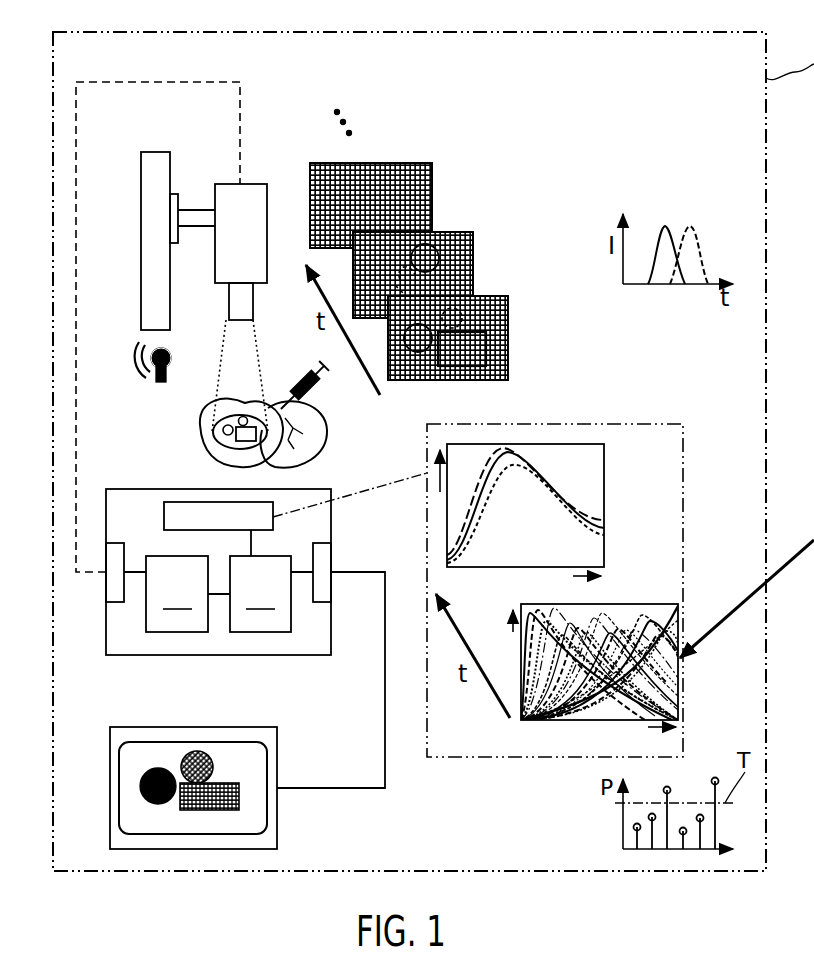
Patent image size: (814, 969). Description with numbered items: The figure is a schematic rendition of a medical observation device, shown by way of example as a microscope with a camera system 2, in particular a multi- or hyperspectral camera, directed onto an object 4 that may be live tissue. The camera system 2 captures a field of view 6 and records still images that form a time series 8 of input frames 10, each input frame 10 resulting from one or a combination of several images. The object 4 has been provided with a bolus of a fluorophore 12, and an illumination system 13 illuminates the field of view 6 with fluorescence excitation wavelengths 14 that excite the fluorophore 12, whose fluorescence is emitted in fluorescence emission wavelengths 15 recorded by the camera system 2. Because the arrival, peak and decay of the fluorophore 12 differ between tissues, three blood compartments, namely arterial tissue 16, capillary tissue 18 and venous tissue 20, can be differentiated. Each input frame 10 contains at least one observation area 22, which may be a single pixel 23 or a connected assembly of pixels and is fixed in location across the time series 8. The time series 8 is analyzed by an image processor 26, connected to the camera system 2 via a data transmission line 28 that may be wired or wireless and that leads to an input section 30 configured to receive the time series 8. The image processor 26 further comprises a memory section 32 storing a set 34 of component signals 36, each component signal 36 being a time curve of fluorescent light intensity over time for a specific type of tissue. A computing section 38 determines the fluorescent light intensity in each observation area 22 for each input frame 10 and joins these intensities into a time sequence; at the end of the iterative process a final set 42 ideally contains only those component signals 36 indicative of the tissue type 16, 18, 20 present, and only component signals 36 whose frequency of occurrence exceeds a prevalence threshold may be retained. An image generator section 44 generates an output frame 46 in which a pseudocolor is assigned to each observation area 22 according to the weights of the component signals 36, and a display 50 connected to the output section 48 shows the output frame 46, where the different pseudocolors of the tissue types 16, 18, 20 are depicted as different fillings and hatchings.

The camera system 2 is at (258, 184).
The object 4 is at (320, 431).
The field of view 6 is at (214, 432).
The time series 8 is at (480, 167).
The input frame 10 is at (388, 138).
The fluorophore 12 is at (283, 400).
The illumination system 13 is at (150, 379).
The fluorescence excitation wavelengths 14 is at (692, 226).
The fluorescence emission wavelengths 15 is at (665, 226).
The arterial tissue 16 is at (243, 417).
The capillary tissue 18 is at (222, 440).
The venous tissue 20 is at (298, 466).
The observation area 22 is at (508, 312).
The pixel 23 is at (506, 344).
The image processor 26 is at (248, 656).
The data transmission line 28 is at (104, 82).
The input section 30 is at (112, 585).
The memory section 32 is at (170, 514).
The set of component signals 34 is at (629, 598).
The component signal 36 is at (593, 510).
The computing section 38 is at (177, 594).
The final set 42 is at (553, 444).
The image generator section 44 is at (260, 594).
The output frame 46 is at (258, 755).
The output section 48 is at (327, 565).
The display 50 is at (277, 823).